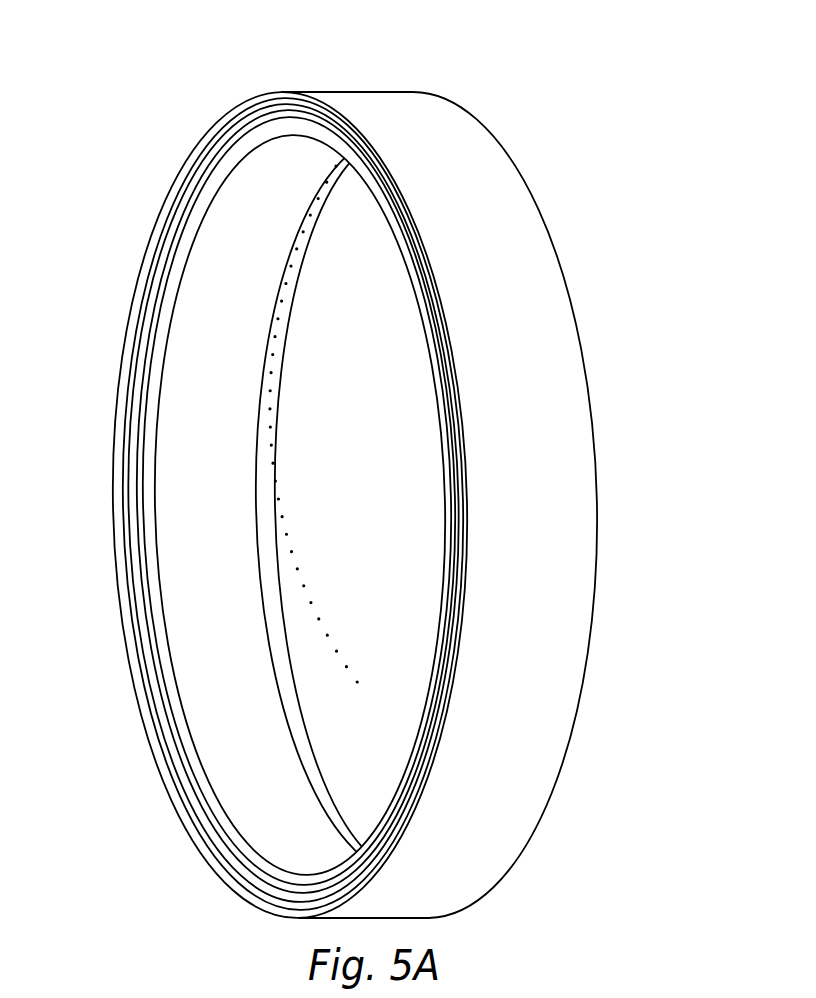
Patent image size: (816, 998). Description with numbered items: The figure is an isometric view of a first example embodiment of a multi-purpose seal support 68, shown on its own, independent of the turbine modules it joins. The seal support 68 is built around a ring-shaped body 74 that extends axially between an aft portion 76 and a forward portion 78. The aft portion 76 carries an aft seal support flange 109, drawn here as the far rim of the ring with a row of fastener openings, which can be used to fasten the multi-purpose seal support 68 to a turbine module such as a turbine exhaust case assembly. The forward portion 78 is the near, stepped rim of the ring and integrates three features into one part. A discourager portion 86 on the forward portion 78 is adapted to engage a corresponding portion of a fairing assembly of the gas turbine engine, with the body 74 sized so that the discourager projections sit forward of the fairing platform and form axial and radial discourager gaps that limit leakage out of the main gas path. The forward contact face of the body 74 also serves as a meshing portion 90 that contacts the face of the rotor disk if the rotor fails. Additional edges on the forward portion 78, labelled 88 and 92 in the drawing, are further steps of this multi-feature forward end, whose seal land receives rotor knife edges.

The multi-purpose seal support 68 is at (597, 144).
The ring-shaped body 74 is at (490, 242).
The aft portion 76 is at (590, 344).
The forward portion 78 is at (206, 128).
The discourager portion 86 is at (263, 97).
The inner hole edge 88 is at (268, 150).
The meshing portion 90 is at (218, 149).
The outer lip 92 is at (151, 228).
The aft seal support flange 109 is at (283, 292).